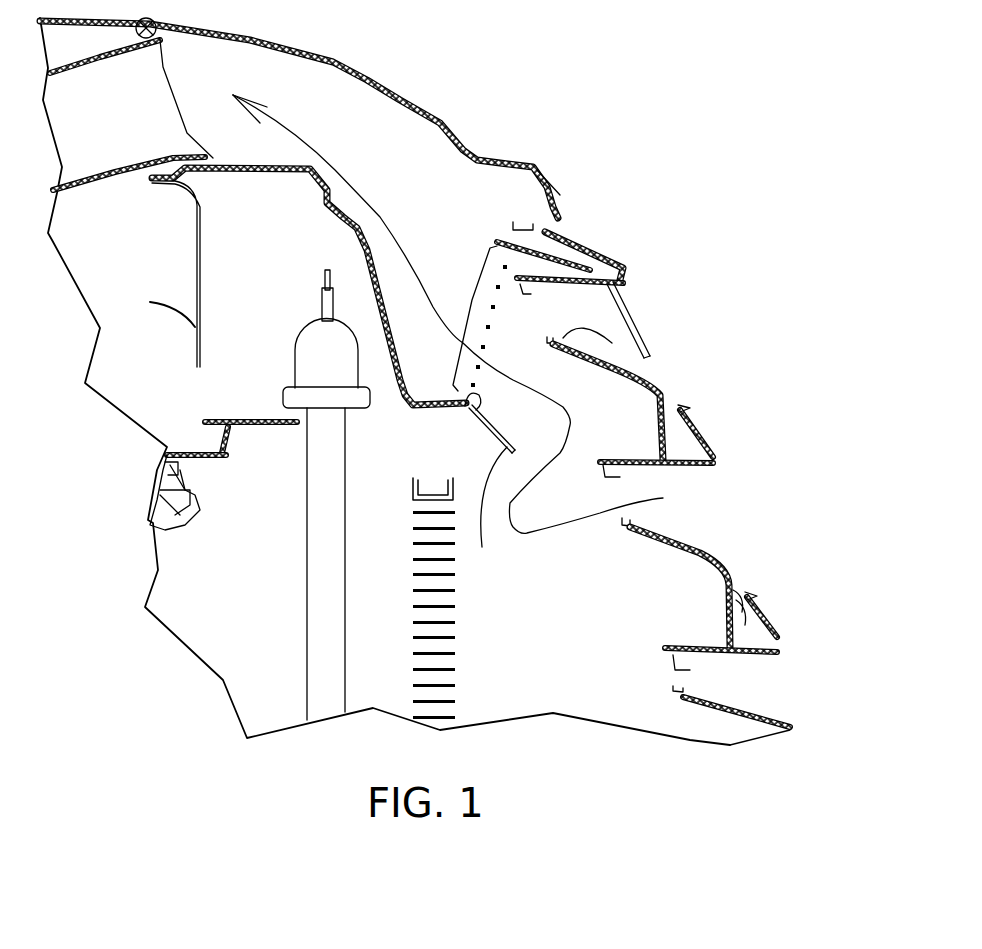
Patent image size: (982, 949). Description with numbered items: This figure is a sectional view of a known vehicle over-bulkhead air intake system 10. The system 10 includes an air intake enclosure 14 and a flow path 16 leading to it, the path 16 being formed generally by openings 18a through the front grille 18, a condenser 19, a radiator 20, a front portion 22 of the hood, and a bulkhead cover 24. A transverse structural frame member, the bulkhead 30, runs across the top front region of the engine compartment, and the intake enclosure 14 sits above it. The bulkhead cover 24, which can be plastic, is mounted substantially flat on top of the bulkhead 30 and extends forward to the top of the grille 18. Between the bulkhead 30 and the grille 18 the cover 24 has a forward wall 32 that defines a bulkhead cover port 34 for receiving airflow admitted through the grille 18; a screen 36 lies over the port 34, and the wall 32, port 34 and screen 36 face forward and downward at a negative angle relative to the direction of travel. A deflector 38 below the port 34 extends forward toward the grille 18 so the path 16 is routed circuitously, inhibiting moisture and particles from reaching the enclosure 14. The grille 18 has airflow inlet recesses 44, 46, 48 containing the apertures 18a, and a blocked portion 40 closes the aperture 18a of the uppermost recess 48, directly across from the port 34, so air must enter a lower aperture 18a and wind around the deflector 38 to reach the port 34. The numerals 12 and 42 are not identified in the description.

The vehicle air intake system 10 is at (632, 782).
The mounting bracket 12 is at (223, 476).
The air intake enclosure 14 is at (97, 118).
The flow path 16 is at (530, 533).
The front fascia or grille 18 is at (686, 402).
The openings 18a is at (612, 343).
The condenser 19 is at (450, 636).
The radiator 20 is at (312, 552).
The front portion of a hood 22 is at (410, 100).
The bulkhead cover 24 is at (397, 393).
The bulkhead 30 is at (203, 233).
The forward wall 32 is at (475, 297).
The bulkhead cover port 34 is at (473, 413).
The screen 36 is at (492, 324).
The deflector 38 is at (486, 512).
The blocked portion 40 is at (623, 310).
The hinge bracket 42 is at (567, 358).
The airflow inlet recess 44 is at (766, 683).
The airflow inlet recess 46 is at (700, 515).
The uppermost airflow inlet recess 48 is at (650, 326).